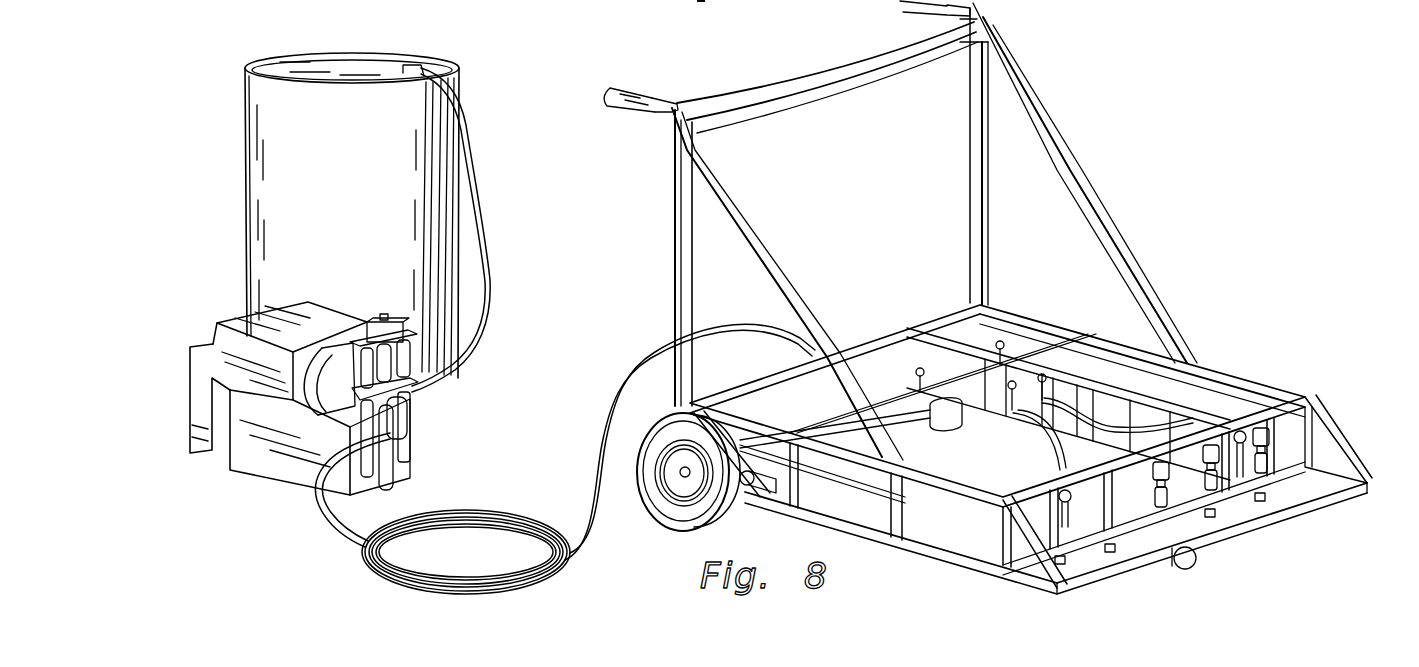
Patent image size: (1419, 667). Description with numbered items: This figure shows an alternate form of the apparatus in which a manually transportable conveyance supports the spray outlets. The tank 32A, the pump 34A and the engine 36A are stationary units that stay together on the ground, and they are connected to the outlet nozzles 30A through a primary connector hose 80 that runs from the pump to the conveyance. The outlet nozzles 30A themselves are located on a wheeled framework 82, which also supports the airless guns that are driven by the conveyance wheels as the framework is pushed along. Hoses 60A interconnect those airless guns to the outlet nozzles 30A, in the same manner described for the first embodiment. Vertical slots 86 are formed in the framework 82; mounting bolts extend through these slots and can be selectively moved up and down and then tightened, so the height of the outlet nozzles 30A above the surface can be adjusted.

The tank 32A is at (265, 178).
The engine 36A is at (237, 325).
The pump 34A is at (410, 400).
The primary connector hose 80 is at (593, 477).
The wheeled framework 82 is at (1270, 380).
The hoses 60A is at (1173, 417).
The outlet nozzles 30A is at (1270, 450).
The vertical slots 86 is at (1243, 507).